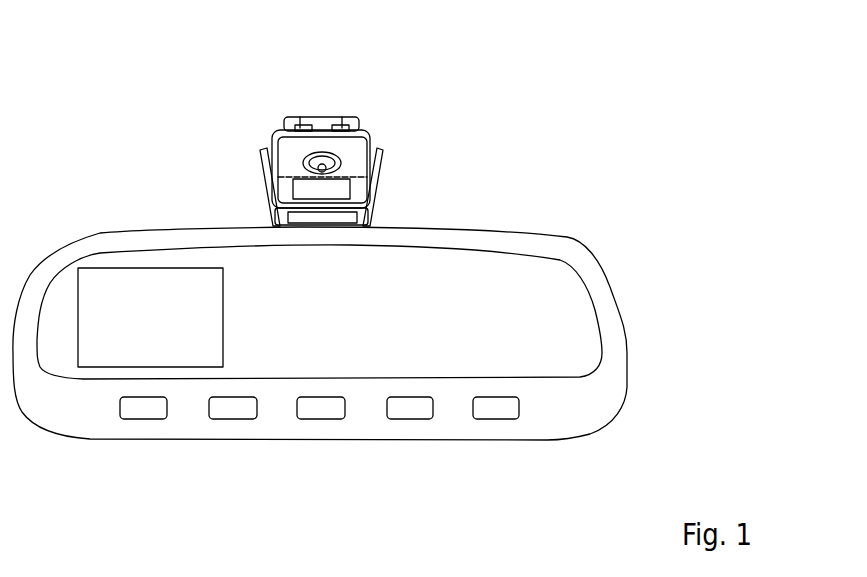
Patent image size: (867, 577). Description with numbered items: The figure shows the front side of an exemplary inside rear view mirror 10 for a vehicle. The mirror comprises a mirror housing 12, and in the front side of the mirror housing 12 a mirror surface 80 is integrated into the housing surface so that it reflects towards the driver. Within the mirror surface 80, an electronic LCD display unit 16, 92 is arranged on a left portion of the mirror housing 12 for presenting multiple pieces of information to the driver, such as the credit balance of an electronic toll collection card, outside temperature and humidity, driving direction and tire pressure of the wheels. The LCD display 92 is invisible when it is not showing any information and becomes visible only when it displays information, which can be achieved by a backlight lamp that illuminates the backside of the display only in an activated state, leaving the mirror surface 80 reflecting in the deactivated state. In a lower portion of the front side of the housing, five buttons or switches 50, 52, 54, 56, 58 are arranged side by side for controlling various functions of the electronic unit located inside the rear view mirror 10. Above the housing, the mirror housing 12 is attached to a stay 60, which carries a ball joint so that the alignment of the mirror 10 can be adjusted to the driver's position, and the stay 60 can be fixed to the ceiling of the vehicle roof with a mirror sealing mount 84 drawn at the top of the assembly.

The inside rear view mirror 10 is at (375, 268).
The mirror housing 12 is at (527, 232).
The electronic LCD display unit 16 is at (150, 317).
The LCD display 92 is at (180, 330).
The mirror surface 80 is at (407, 328).
The mirror sealing mount 84 is at (352, 144).
The stay 60 is at (370, 223).
The button or switch 50 is at (143, 410).
The button or switch 52 is at (233, 410).
The button or switch 54 is at (320, 410).
The button or switch 56 is at (412, 410).
The button or switch 58 is at (497, 410).